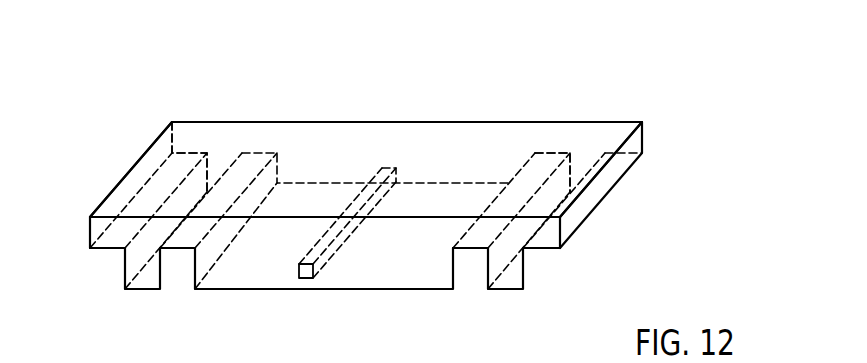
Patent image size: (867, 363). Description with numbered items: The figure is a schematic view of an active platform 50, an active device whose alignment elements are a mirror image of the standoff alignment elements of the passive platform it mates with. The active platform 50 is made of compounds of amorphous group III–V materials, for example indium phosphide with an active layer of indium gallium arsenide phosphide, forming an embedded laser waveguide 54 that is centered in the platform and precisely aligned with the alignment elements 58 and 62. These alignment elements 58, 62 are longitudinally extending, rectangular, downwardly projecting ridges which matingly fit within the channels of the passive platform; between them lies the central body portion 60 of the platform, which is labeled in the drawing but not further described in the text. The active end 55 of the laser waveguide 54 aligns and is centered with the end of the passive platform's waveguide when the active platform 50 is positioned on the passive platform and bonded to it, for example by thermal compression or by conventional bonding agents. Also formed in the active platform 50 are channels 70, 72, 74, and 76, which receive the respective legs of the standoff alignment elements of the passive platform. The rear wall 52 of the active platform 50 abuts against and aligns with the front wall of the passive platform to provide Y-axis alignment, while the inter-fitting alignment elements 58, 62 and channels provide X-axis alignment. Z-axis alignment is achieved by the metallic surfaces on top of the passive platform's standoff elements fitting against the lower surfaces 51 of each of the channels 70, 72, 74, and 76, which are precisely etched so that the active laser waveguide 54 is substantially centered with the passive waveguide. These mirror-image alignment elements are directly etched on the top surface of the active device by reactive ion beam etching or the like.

The active platform 50 is at (267, 136).
The lower surfaces of the channels 51 is at (252, 167).
The rear wall 52 is at (457, 135).
The laser waveguide 54 is at (306, 278).
The active end of laser waveguide 55 is at (400, 167).
The alignment element 58 is at (143, 292).
The central block 60 is at (233, 291).
The alignment element 62 is at (505, 291).
The channel 70 is at (105, 250).
The channel 72 is at (175, 252).
The channel 74 is at (473, 250).
The channel 76 is at (542, 250).